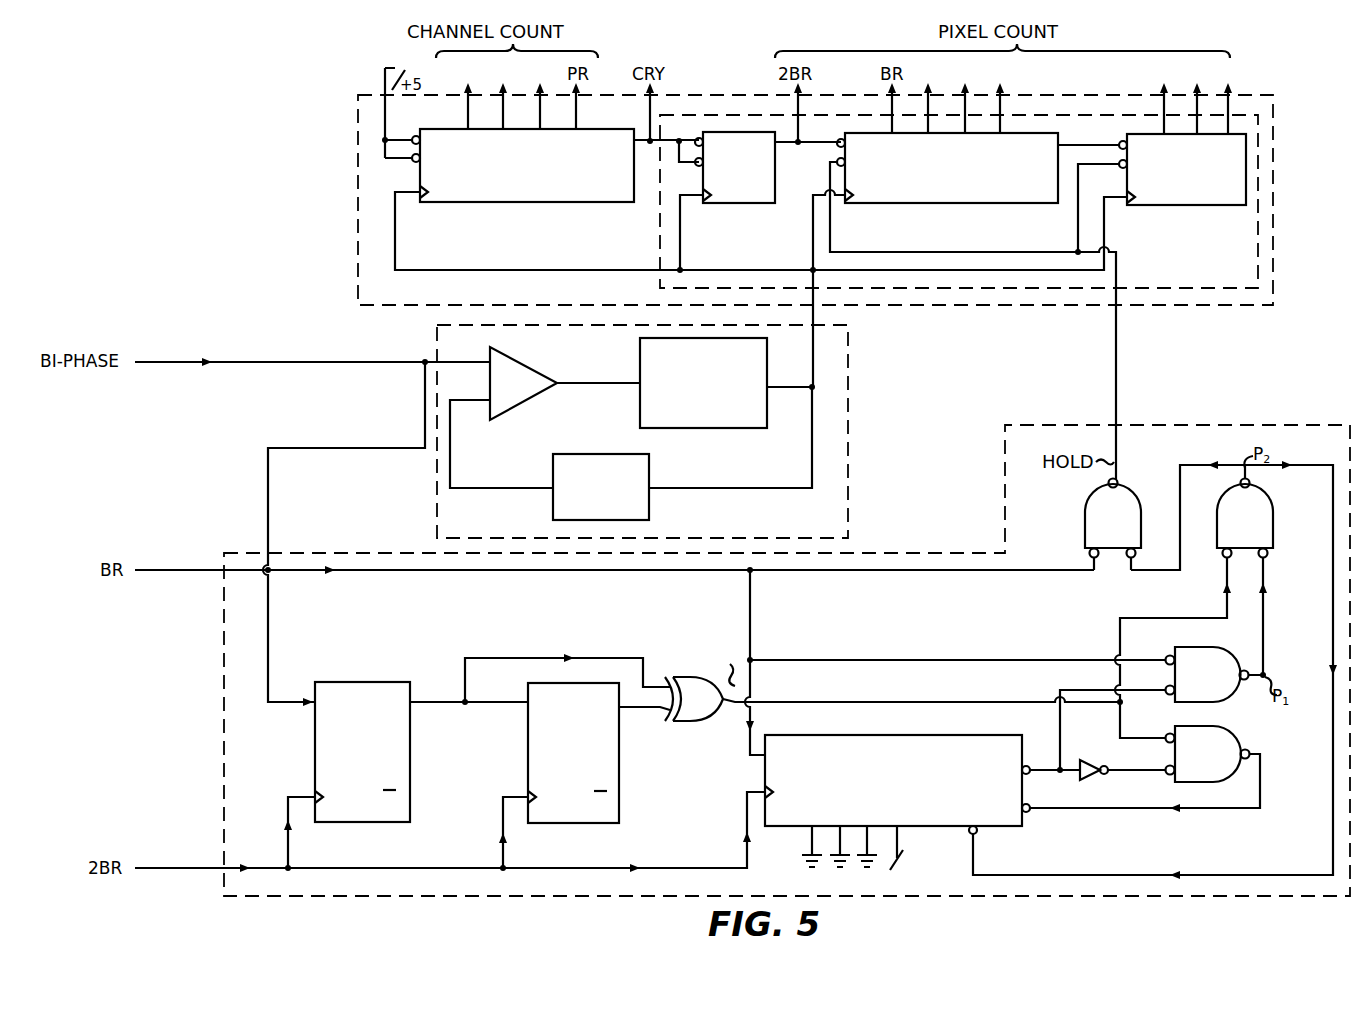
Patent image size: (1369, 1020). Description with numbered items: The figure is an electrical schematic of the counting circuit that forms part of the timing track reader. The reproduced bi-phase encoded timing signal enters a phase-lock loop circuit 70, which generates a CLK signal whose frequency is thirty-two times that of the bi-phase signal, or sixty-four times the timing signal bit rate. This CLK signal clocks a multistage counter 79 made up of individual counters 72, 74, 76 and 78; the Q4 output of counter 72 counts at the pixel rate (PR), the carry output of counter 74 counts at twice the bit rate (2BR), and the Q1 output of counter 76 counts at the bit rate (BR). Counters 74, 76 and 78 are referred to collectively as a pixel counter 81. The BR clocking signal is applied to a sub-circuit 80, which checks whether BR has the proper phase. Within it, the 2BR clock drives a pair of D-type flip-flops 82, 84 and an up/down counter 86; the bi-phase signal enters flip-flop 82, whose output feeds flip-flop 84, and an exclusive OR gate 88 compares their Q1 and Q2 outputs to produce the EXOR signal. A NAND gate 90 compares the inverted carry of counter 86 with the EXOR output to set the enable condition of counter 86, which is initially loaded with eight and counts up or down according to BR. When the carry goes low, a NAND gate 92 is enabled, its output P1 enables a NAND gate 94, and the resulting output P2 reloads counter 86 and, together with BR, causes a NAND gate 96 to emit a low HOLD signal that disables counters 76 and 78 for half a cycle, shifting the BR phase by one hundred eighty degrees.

The phase-lock loop circuit 70 is at (852, 446).
The counter 72 is at (536, 203).
The counter 74 is at (751, 204).
The counter 76 is at (930, 204).
The counter 78 is at (1170, 206).
The multistage counter 79 is at (358, 252).
The sub-circuit 80 is at (971, 552).
The pixel counter 81 is at (1258, 284).
The D-type flip-flop 82 is at (375, 823).
The D-type flip-flop 84 is at (585, 824).
The up/down counter 86 is at (897, 803).
The exclusive OR gate 88 is at (700, 683).
The NAND gate 90 is at (1208, 754).
The NAND gate 92 is at (1207, 674).
The NAND gate 94 is at (1245, 518).
The NAND gate 96 is at (1113, 518).